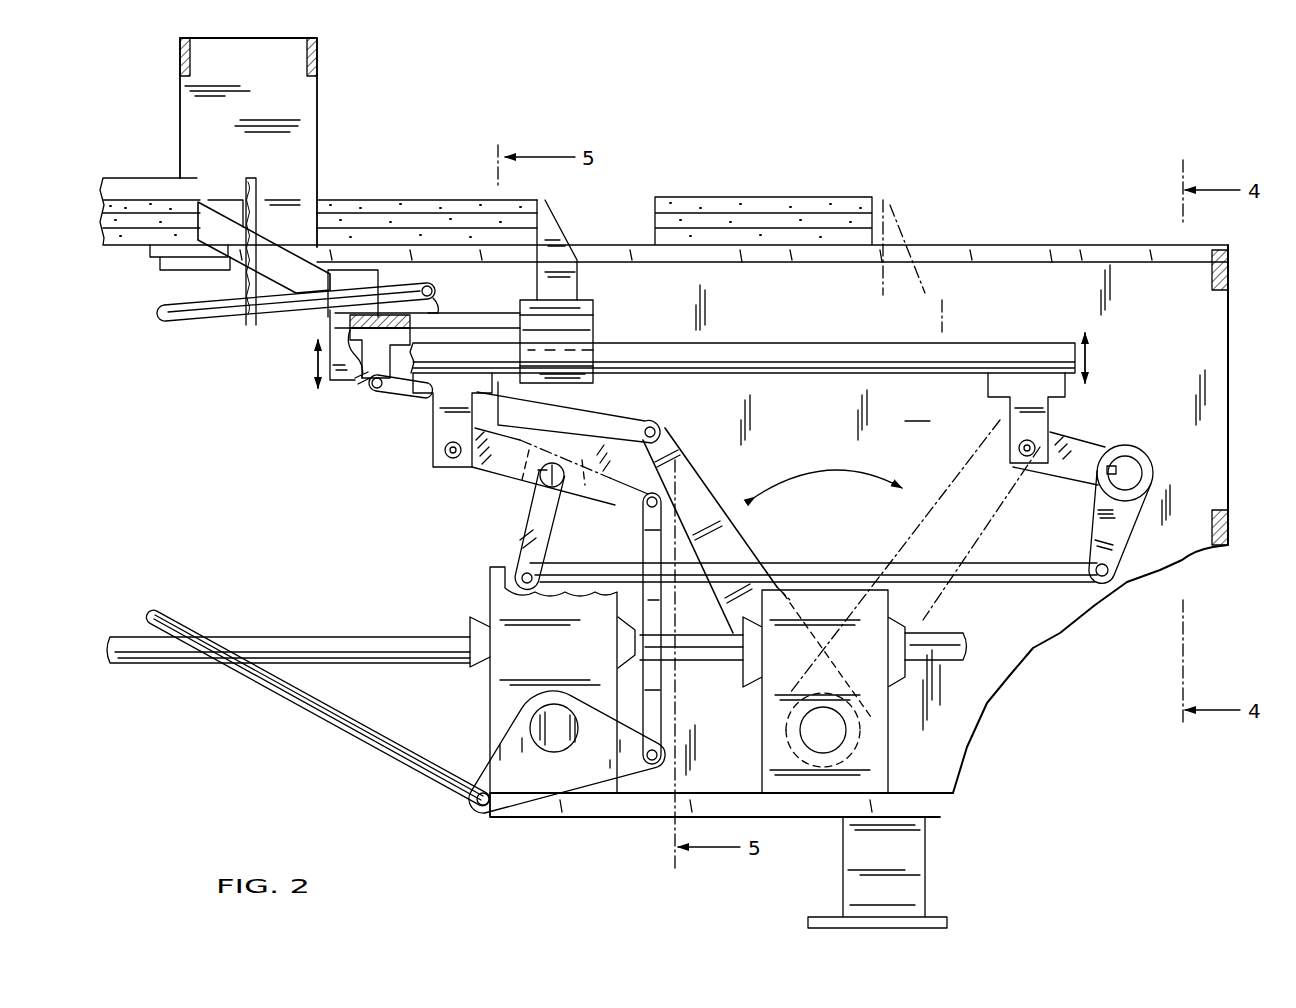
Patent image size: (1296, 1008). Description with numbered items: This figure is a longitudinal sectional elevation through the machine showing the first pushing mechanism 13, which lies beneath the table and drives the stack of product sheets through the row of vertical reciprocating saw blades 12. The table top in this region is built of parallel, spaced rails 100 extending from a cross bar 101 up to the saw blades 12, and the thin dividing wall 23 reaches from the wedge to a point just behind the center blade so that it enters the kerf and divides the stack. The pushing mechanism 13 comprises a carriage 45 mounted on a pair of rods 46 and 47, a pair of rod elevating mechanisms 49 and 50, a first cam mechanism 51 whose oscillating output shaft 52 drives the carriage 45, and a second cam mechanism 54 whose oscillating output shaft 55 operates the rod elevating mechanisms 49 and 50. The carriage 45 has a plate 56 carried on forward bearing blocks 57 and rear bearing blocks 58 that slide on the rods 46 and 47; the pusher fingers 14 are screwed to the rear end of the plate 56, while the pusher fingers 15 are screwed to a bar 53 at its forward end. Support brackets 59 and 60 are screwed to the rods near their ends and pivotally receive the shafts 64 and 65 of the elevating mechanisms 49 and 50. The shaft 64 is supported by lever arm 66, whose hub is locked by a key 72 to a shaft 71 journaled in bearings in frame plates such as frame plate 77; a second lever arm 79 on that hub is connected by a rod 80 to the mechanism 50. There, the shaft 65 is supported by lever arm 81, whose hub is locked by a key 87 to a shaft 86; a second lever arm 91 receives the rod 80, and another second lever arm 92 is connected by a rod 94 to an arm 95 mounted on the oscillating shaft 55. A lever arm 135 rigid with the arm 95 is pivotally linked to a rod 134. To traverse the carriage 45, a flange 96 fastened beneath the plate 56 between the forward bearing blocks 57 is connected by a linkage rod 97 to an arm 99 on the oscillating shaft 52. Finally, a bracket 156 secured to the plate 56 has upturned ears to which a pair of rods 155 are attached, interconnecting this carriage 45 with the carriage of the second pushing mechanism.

The vertical reciprocating saw blades 12 is at (258, 190).
The pushing mechanism 13 is at (1172, 365).
The pusher fingers 14 is at (548, 230).
The pusher fingers 15 is at (220, 228).
The dividing wall 23 is at (198, 203).
The carriage 45 is at (594, 318).
The rod 46 is at (825, 352).
The rod 47 is at (360, 380).
The rod elevating mechanism 49 is at (1140, 446).
The rod elevating mechanism 50 is at (434, 473).
The first cam mechanism 51 is at (875, 775).
The oscillating output shaft 52 is at (850, 737).
The bar 53 is at (357, 293).
The second cam mechanism 54 is at (510, 695).
The oscillating output shaft 55 is at (575, 722).
The plate 56 is at (480, 320).
The forward bearing blocks 57 is at (337, 333).
The rear bearing blocks 58 is at (585, 370).
The support bracket 59 is at (1040, 420).
The support bracket 60 is at (450, 422).
The shaft 64 is at (1030, 460).
The shaft 65 is at (455, 460).
The lever arm 66 is at (1090, 450).
The shaft 71 is at (1130, 478).
The key 72 is at (1108, 470).
The frame plate 77 is at (917, 411).
The second lever arm 79 is at (1122, 540).
The rod 80 is at (993, 568).
The lever arm 81 is at (496, 470).
The shaft 86 is at (560, 470).
The key 87 is at (531, 485).
The second lever arm 91 is at (540, 545).
The second lever arm 92 is at (582, 498).
The rod 94 is at (652, 526).
The arm 95 is at (608, 752).
The flange 96 is at (372, 390).
The linkage rod 97 is at (632, 426).
The arm 99 is at (725, 525).
The rails 100 is at (1020, 250).
The cross bar 101 is at (1230, 278).
The rod 134 is at (382, 750).
The lever arm 135 is at (505, 762).
The rods 155 is at (222, 312).
The bracket 156 is at (440, 308).